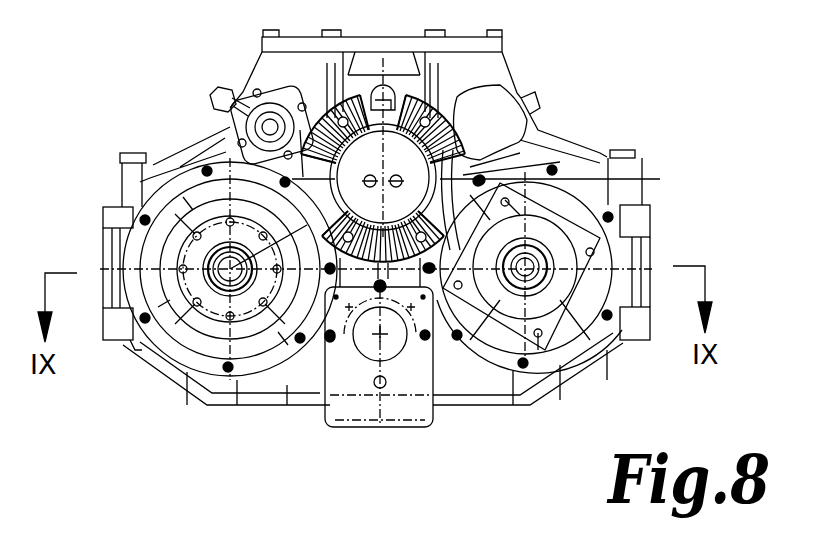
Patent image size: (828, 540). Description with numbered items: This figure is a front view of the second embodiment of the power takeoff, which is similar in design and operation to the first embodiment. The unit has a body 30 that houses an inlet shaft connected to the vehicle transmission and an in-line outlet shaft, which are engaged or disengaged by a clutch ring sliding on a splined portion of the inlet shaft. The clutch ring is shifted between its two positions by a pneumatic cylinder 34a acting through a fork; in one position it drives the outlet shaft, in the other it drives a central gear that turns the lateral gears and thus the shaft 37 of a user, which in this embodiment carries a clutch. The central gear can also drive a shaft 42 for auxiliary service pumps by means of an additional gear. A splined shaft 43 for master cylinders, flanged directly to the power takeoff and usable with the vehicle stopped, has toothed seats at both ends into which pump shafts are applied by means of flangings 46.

The body 30 is at (512, 72).
The pneumatic cylinder 34a is at (257, 117).
The shaft 37 is at (214, 285).
The shaft for auxiliary service pumps 42 is at (393, 345).
The splined shaft 43 is at (543, 280).
The flangings 46 is at (577, 237).